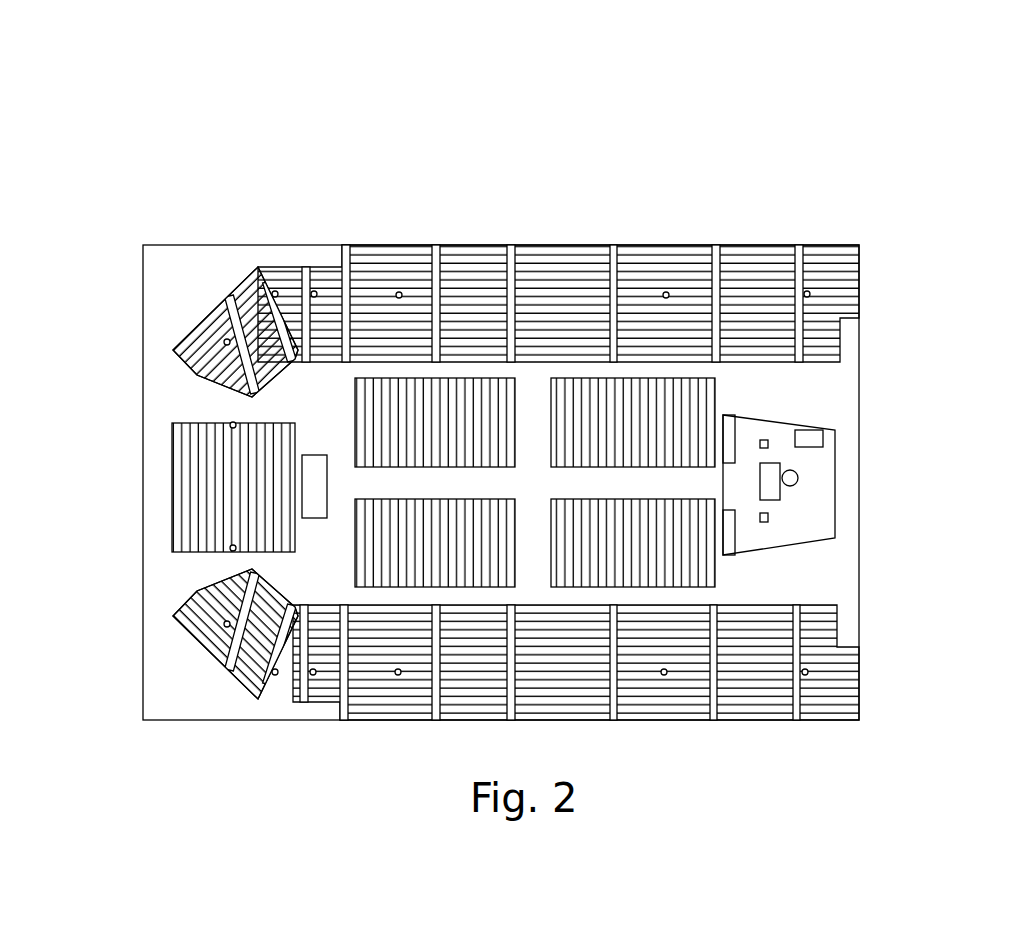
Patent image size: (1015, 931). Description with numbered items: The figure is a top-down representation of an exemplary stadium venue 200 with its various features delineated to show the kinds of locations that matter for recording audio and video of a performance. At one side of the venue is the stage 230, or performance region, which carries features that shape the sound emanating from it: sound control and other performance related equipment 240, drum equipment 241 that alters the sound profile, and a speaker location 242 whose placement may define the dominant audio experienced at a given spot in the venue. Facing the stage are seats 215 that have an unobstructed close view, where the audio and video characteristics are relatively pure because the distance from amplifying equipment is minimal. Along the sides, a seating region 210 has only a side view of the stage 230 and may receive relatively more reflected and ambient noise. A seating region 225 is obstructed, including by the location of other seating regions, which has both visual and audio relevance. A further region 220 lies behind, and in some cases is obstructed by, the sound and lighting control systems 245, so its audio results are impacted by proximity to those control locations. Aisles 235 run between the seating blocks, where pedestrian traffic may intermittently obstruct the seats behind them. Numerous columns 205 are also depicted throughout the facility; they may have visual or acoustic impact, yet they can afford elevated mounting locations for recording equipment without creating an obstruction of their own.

The stadium venue 200 is at (190, 170).
The columns 205 is at (803, 675).
The side-view seating region 210 is at (828, 247).
The seats 215 is at (678, 420).
The region behind control locations 220 is at (243, 520).
The obstructed seating region 225 is at (205, 320).
The stage 230 is at (737, 413).
The aisles 235 is at (527, 550).
The sound control and performance related equipment 240 is at (760, 354).
The drum equipment 241 is at (800, 478).
The speaker location 242 is at (725, 553).
The sound and lighting control systems 245 is at (300, 483).